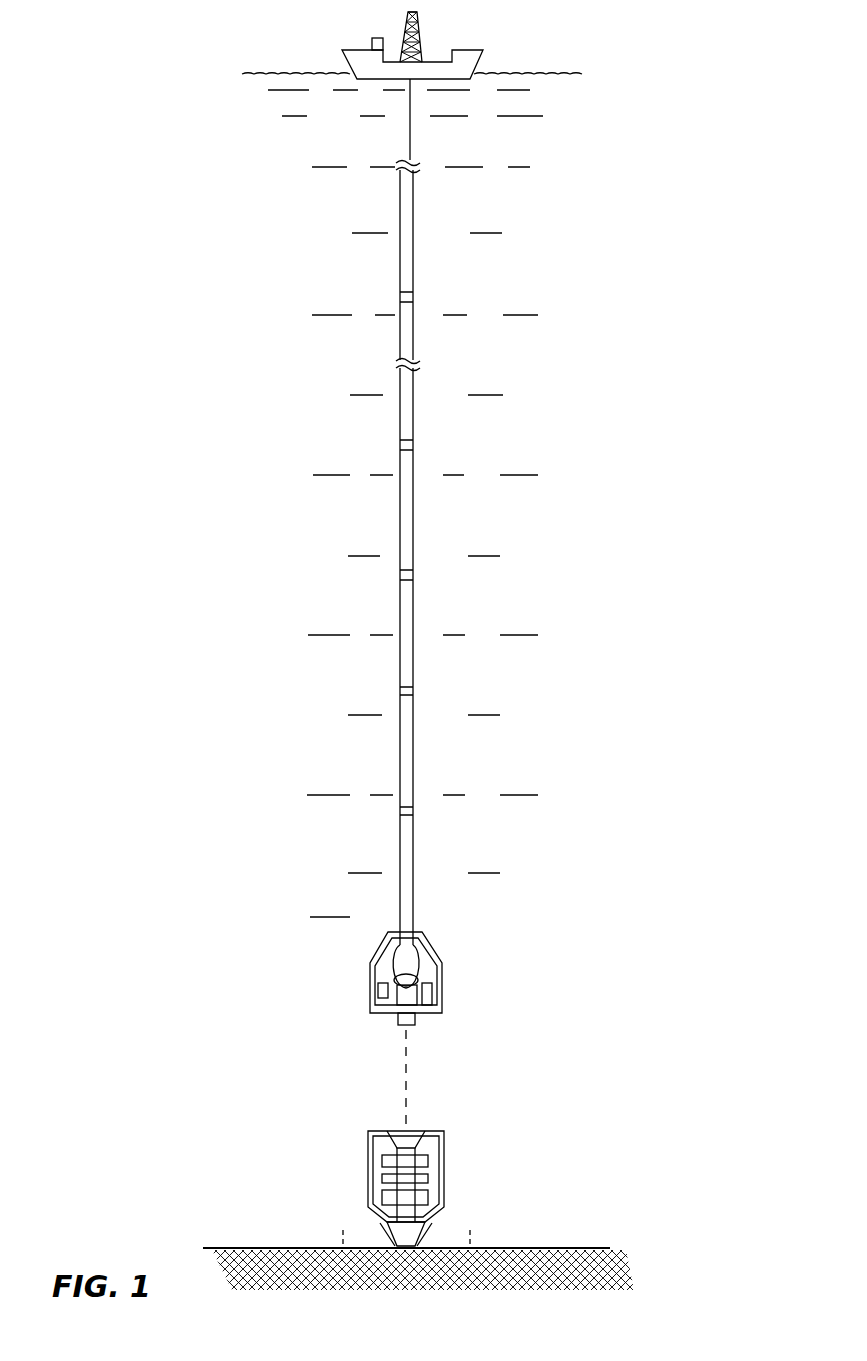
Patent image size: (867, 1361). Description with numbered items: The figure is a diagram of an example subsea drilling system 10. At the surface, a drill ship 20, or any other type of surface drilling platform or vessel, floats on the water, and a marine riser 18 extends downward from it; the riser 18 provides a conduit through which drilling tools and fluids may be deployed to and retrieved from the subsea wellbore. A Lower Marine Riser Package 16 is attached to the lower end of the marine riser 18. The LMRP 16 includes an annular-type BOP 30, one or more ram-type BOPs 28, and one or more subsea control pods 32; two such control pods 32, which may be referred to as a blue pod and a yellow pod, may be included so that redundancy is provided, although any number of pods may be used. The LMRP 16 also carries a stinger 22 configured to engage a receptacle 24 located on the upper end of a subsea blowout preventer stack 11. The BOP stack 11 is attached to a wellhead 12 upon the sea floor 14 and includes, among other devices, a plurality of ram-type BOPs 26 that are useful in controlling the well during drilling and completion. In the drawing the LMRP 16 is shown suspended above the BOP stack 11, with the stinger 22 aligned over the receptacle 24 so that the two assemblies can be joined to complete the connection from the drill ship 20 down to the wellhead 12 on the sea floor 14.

The subsea drilling system 10 is at (577, 742).
The subsea blowout preventer stack 11 is at (410, 1173).
The wellhead 12 is at (380, 1222).
The sea floor 14 is at (535, 1248).
The Lower Marine Riser Package 16 is at (415, 982).
The marine riser 18 is at (413, 762).
The drill ship 20 is at (466, 48).
The stinger 22 is at (397, 1021).
The receptacle 24 is at (413, 1130).
The ram-type BOPs 26 is at (385, 1162).
The ram-type BOP 28 is at (418, 982).
The annular-type BOP 30 is at (400, 955).
The subsea control pod 32 is at (432, 997).